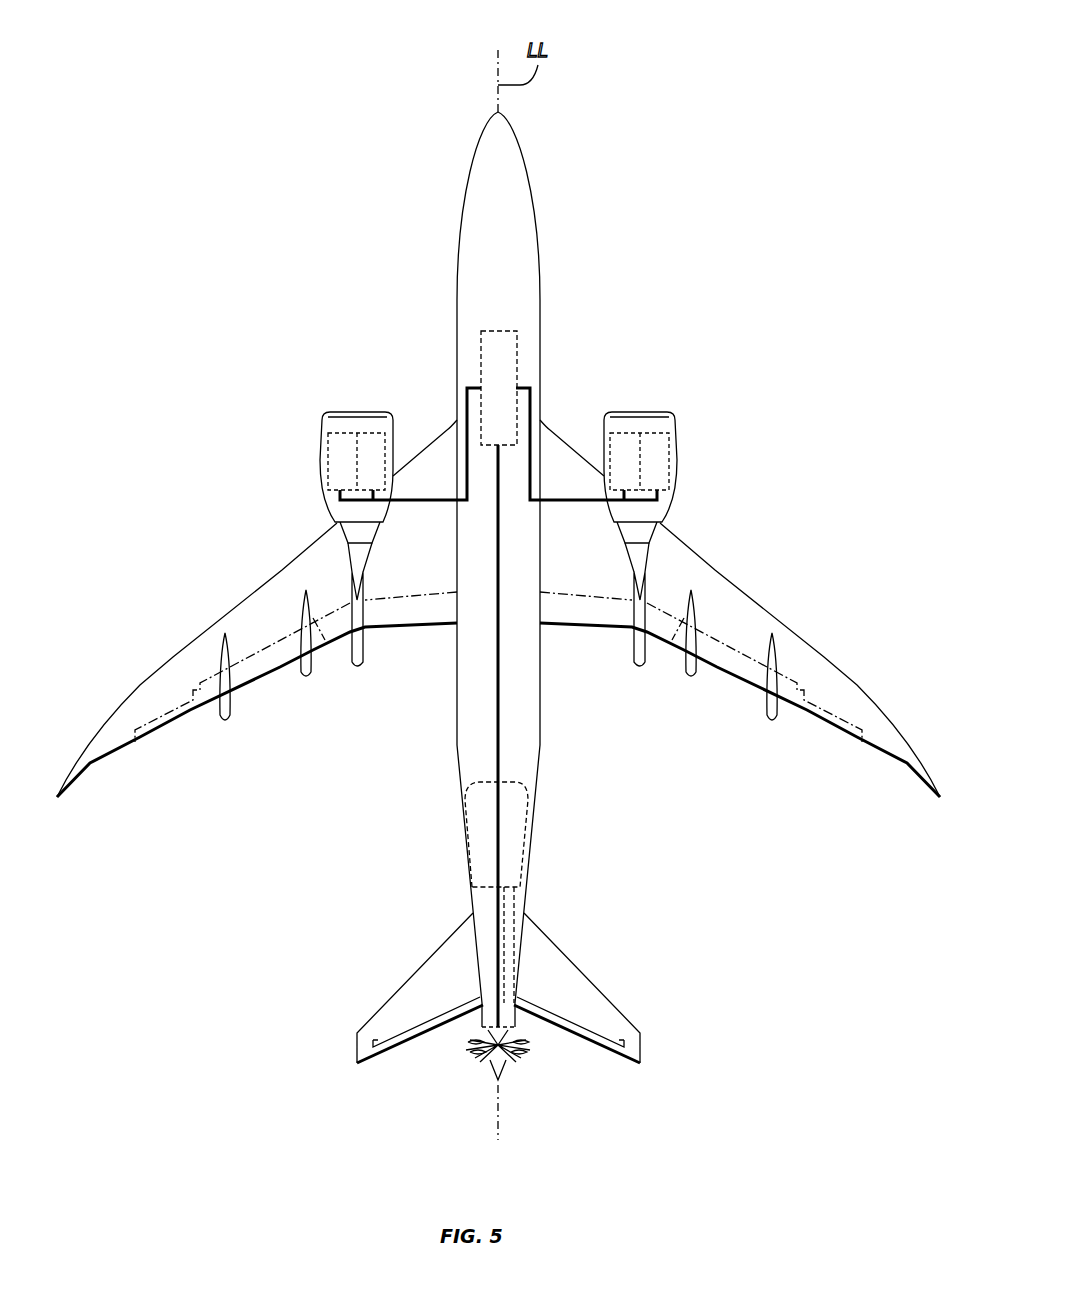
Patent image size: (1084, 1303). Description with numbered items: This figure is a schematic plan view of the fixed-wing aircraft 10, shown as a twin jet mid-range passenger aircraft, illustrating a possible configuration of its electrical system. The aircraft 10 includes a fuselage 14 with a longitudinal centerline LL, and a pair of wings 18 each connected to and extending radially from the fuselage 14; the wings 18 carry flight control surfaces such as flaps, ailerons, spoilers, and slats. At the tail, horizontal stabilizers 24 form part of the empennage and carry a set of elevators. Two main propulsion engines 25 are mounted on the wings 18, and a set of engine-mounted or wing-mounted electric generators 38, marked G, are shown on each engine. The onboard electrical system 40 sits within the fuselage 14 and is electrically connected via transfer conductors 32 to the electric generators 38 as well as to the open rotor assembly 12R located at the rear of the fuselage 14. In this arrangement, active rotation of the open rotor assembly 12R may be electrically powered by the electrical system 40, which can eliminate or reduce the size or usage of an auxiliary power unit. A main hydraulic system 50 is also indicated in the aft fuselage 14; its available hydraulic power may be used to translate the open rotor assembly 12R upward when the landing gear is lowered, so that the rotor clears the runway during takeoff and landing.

The fixed-wing aircraft 10 is at (692, 56).
The fuselage 14 is at (543, 295).
The wings 18 is at (270, 628).
The horizontal stabilizers 24 is at (410, 962).
The main propulsion engines 25 is at (360, 410).
The transfer conductors 32 is at (430, 510).
The electric generators 38 is at (328, 455).
The onboard electrical system 40 is at (510, 380).
The main hydraulic system 50 is at (510, 782).
The open rotor assembly 12R is at (518, 1080).